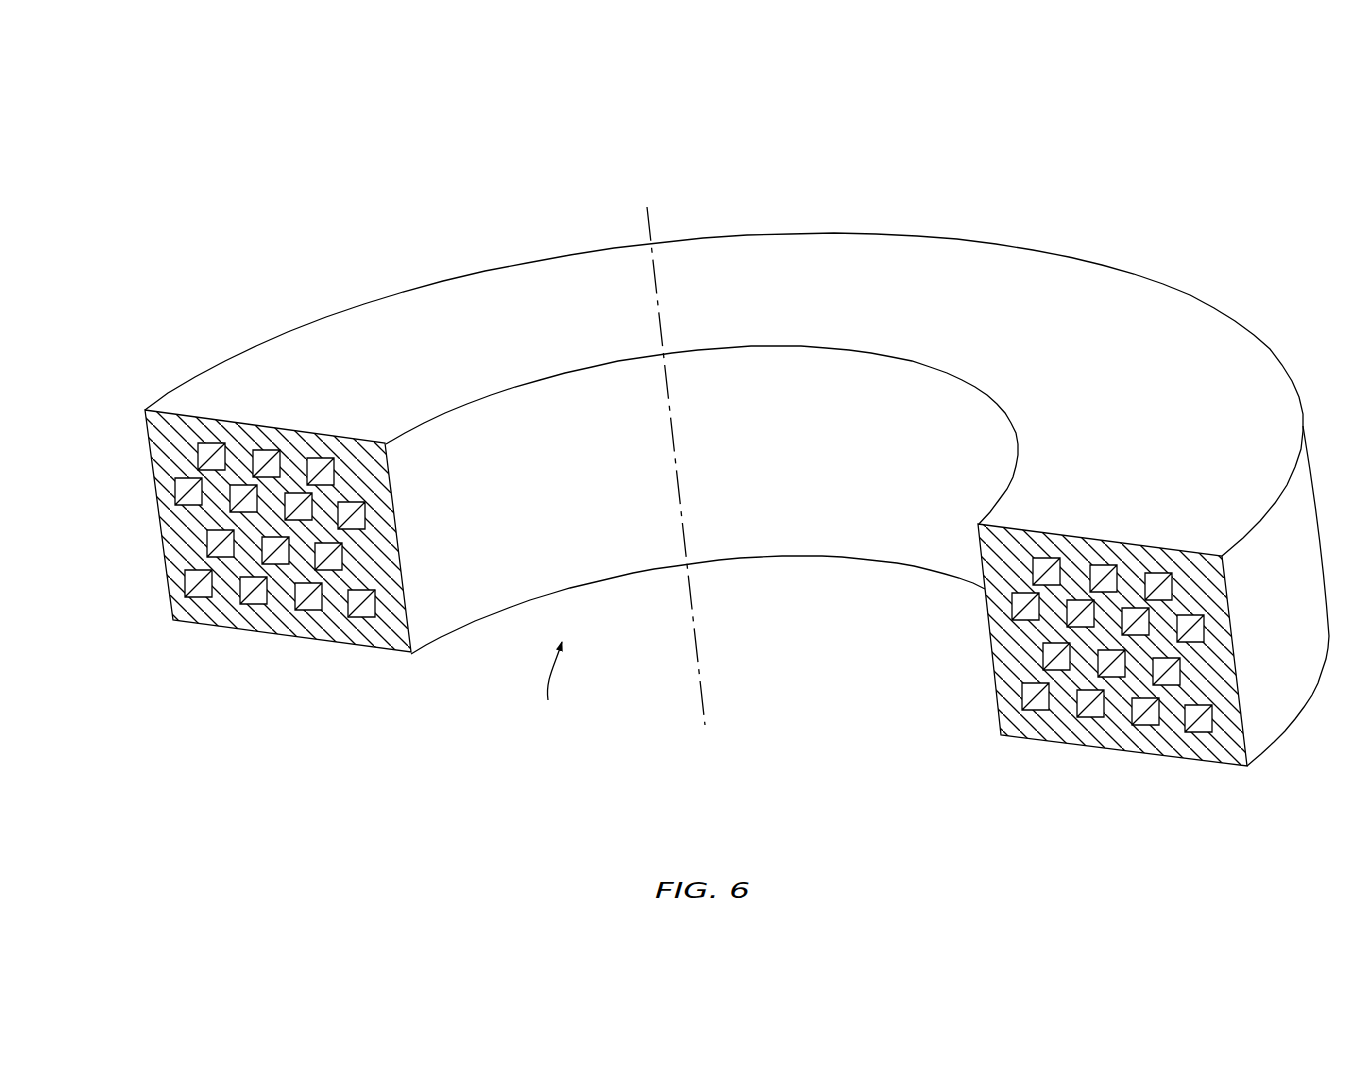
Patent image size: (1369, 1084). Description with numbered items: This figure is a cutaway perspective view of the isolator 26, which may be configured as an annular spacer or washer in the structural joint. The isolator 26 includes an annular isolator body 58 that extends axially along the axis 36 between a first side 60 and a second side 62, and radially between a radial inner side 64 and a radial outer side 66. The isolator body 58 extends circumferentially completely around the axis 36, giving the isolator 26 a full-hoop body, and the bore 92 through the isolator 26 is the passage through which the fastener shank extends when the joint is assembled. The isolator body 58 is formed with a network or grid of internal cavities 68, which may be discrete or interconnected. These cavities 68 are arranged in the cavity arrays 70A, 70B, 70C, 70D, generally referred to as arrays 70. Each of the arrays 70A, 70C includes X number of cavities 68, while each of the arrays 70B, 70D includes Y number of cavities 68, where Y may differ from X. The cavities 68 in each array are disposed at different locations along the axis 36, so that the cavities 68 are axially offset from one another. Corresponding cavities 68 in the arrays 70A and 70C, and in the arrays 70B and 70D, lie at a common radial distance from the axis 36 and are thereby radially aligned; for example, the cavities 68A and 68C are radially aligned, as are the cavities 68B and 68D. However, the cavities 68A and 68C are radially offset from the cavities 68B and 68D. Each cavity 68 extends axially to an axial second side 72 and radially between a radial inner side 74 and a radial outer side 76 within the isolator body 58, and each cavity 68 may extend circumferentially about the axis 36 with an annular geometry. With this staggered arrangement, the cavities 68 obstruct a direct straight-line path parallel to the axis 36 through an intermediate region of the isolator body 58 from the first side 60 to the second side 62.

The isolator 26 is at (701, 458).
The axis 36 is at (700, 717).
The annular isolator body 58 is at (1208, 299).
The first side 60 is at (1270, 502).
The second side 62 is at (1280, 740).
The radial inner side 64 is at (980, 559).
The radial outer side 66 is at (1222, 590).
The internal cavities 68 is at (1147, 571).
The cavity 68A is at (218, 442).
The cavity 68B is at (193, 480).
The cavity 68C is at (222, 558).
The cavity 68D is at (197, 598).
The cavity arrays 70 is at (376, 637).
The cavity array 70A is at (201, 428).
The cavity array 70B is at (210, 436).
The cavity array 70C is at (215, 603).
The cavity array 70D is at (256, 636).
The axial second side 72 is at (362, 620).
The radial inner side 74 is at (388, 620).
The radial outer side 76 is at (345, 604).
The bore 92 is at (546, 684).